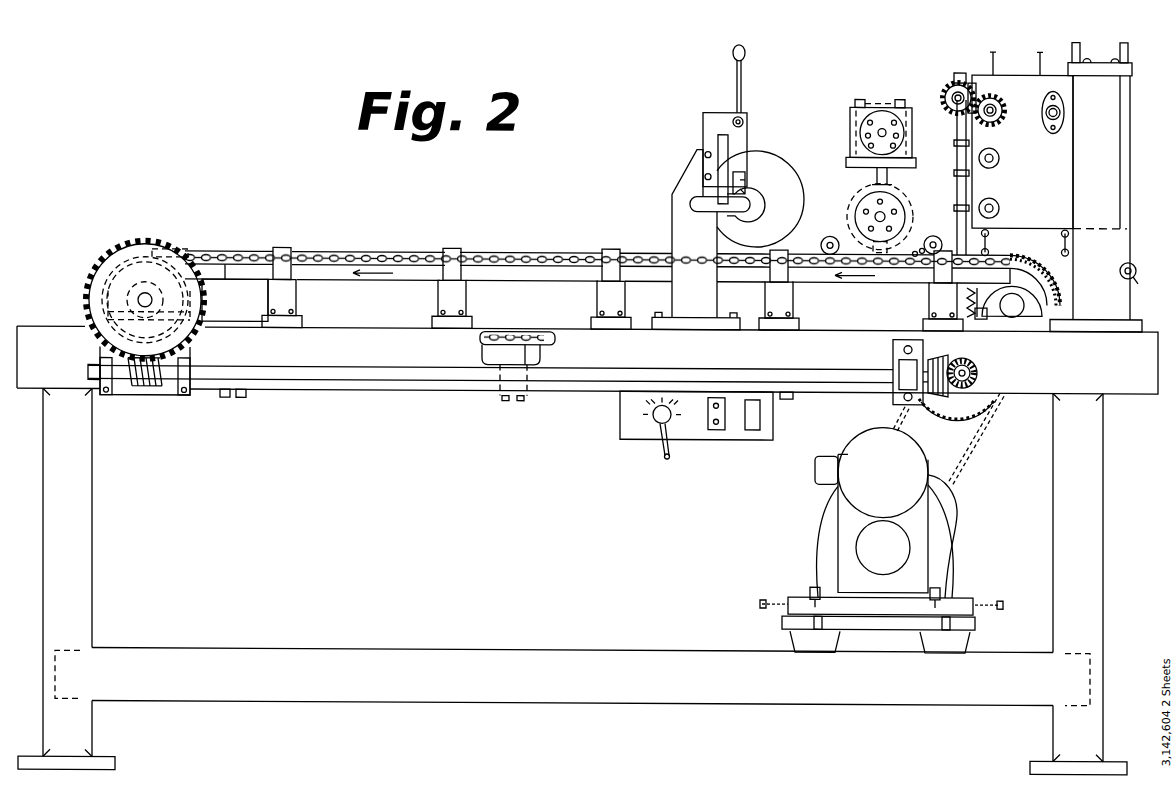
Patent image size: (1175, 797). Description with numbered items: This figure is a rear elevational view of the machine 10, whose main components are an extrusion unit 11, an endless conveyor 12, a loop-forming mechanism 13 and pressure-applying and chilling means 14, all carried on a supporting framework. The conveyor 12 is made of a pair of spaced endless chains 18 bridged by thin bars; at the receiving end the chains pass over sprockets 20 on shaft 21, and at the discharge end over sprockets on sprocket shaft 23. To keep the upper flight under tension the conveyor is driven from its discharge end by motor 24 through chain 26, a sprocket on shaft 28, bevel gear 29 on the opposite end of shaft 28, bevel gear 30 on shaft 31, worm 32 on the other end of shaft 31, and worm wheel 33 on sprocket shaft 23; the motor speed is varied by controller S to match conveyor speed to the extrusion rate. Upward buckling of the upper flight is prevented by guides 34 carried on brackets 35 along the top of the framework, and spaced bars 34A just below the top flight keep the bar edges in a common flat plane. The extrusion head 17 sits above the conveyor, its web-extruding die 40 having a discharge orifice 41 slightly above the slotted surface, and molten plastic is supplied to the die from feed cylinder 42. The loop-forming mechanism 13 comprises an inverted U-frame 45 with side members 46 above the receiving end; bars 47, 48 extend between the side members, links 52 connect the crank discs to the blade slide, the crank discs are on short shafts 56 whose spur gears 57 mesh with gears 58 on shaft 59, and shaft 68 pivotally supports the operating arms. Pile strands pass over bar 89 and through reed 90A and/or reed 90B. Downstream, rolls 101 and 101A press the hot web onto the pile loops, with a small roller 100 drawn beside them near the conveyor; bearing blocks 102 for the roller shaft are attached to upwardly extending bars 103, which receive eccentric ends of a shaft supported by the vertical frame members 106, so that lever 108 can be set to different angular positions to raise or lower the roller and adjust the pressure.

The machine 10 is at (602, 431).
The extrusion unit 11 is at (842, 133).
The endless conveyor 12 is at (255, 256).
The loop-forming mechanism 13 is at (1032, 53).
The pressure-applying and chilling means 14 is at (680, 138).
The extrusion head 17 is at (858, 196).
The endless chains 18 is at (226, 266).
The sprockets 20 is at (1057, 292).
The shaft 21 is at (1011, 313).
The sprocket shaft 23 is at (138, 300).
The motor 24 is at (918, 541).
The chain 26 is at (965, 461).
The shaft 28 is at (977, 366).
The bevel gear 29 is at (979, 372).
The bevel gear 30 is at (941, 398).
The shaft 31 is at (662, 366).
The worm 32 is at (150, 386).
The worm wheel 33 is at (104, 274).
The guides 34 is at (335, 252).
The spaced bars 34A is at (352, 280).
The brackets 35 is at (286, 297).
The web-extruding die 40 is at (902, 211).
The discharge orifice 41 is at (879, 248).
The feed cylinder 42 is at (905, 141).
The inverted U-frame 45 is at (1108, 242).
The side members 46 is at (1054, 68).
The bar 47 is at (999, 156).
The bar 48 is at (999, 203).
The links 52 is at (956, 156).
The short shafts 56 is at (957, 87).
The spur gears 57 is at (944, 88).
The gears 58 is at (1000, 117).
The shaft 59 is at (995, 104).
The shaft 68 is at (1050, 127).
The bar 89 is at (1133, 274).
The reed 90A is at (1068, 232).
The reed 90B is at (988, 232).
The roller 100 is at (936, 226).
The roll 101 is at (827, 236).
The roll 101A is at (795, 160).
The bearing blocks 102 is at (758, 197).
The mounting bars 103 is at (746, 129).
The vertical frame members 106 is at (688, 182).
The lever 108 is at (743, 80).
The controller S is at (689, 432).